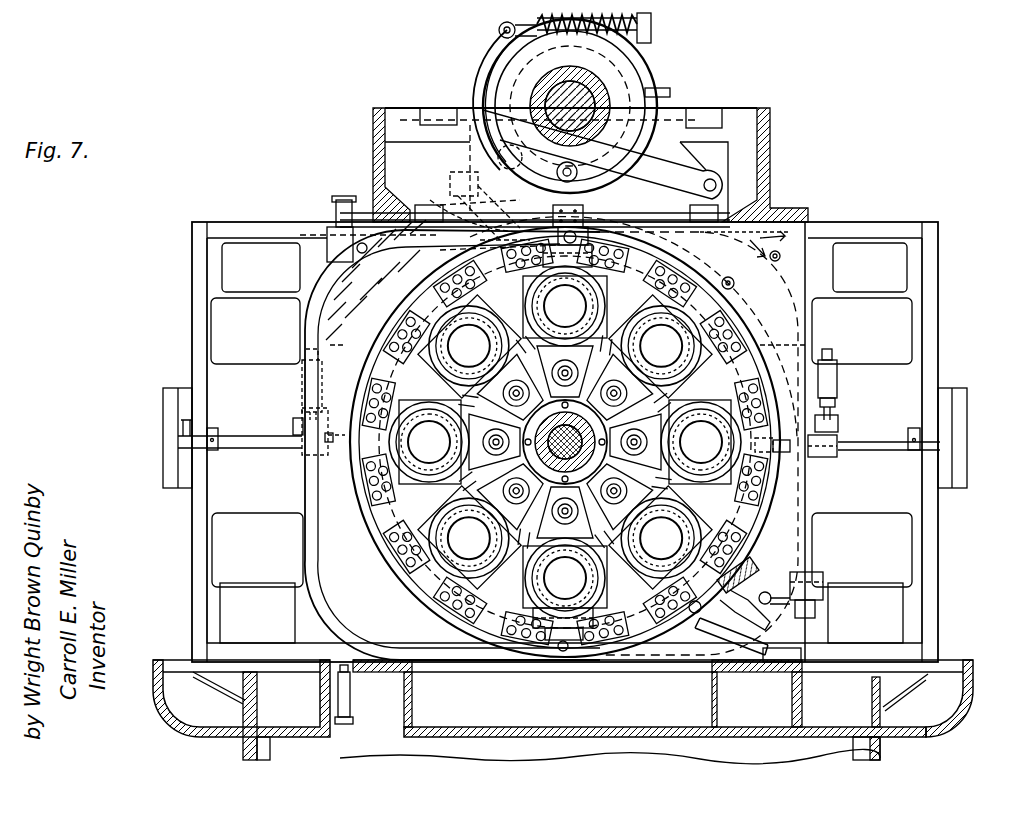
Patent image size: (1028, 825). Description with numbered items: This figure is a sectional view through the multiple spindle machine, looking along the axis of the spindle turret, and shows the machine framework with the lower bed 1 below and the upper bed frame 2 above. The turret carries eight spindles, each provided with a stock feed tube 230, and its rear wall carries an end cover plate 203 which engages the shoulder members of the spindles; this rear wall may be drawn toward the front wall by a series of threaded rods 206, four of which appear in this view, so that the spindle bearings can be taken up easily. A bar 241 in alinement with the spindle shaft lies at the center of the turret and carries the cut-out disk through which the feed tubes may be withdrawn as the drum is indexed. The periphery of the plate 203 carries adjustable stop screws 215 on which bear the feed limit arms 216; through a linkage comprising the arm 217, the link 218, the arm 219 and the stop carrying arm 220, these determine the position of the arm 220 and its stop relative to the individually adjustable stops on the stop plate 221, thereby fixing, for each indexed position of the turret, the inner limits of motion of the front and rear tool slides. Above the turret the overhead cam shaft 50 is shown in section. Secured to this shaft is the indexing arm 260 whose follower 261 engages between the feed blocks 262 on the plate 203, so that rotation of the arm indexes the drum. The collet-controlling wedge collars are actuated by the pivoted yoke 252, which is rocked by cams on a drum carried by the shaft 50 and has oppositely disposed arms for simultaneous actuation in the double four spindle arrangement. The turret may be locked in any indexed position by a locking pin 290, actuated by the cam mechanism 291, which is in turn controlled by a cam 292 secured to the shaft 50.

The lower bed 1 is at (183, 730).
The upper bed frame 2 is at (373, 118).
The cam shaft 50 is at (520, 150).
The end cover plate 203 is at (787, 477).
The threaded rod 206 is at (338, 257).
The adjustable stop screw 215 is at (340, 302).
The feed limit arm 216 is at (579, 419).
The arm 217 is at (333, 344).
The link 218 is at (305, 403).
The arm 219 is at (303, 432).
The stop carrying arm 220 is at (183, 445).
The stop plate 221 is at (170, 397).
The stock feed tube 230 is at (478, 335).
The bar 241 is at (547, 446).
The actuating pivoted yoke 252 is at (304, 478).
The indexing arm 260 is at (690, 110).
The follower 261 is at (714, 178).
The feed block 262 is at (630, 227).
The locking pin 290 is at (487, 202).
The cam mechanism 291 is at (477, 80).
The cam 292 is at (652, 20).